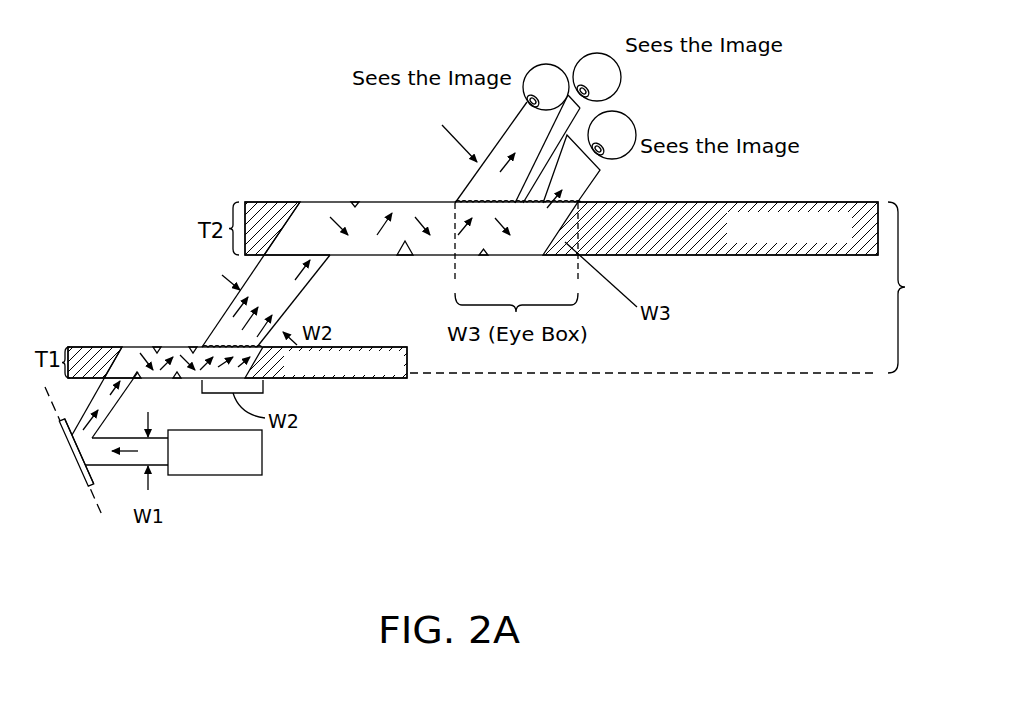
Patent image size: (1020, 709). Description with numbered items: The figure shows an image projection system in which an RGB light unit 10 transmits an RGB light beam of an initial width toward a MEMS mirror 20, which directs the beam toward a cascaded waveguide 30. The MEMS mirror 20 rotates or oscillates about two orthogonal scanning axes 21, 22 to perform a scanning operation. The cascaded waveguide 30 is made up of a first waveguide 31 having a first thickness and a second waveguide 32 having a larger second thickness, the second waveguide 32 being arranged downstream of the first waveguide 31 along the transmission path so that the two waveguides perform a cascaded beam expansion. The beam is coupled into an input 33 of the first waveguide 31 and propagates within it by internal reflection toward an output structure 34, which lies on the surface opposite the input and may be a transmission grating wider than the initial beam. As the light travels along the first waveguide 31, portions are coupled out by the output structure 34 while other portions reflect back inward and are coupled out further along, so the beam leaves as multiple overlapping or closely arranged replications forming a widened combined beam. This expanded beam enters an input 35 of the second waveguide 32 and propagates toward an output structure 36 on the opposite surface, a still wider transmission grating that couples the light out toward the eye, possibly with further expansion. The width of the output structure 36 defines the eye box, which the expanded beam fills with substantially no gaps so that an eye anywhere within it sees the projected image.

The RGB light unit 10 is at (207, 477).
The MEMS mirror 20 is at (93, 486).
The scanning axis 21 is at (67, 446).
The scanning axis 22 is at (101, 500).
The cascaded waveguide 30 is at (502, 298).
The first waveguide 31 is at (382, 378).
The second waveguide 32 is at (272, 200).
The input 33 is at (122, 386).
The output structure 34 is at (215, 343).
The input 35 is at (317, 272).
The output structure 36 is at (474, 197).